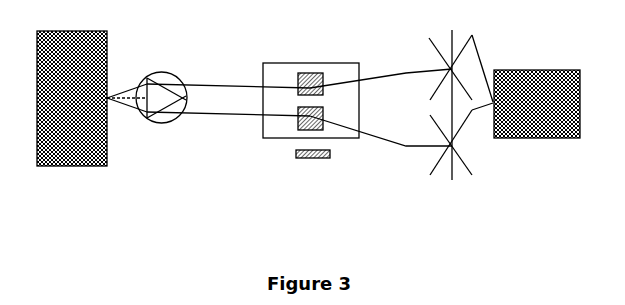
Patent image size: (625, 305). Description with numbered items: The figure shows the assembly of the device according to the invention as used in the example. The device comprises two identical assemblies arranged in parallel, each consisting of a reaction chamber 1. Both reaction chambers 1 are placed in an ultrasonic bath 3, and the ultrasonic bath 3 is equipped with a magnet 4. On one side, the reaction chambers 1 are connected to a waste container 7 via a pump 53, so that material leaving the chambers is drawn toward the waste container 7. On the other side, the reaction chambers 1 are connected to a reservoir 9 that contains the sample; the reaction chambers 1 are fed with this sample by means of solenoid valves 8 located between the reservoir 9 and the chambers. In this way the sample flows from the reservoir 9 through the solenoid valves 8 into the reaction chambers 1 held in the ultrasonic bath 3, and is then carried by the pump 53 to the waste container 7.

The waste container 7 is at (72, 98).
The pump 53 is at (161, 146).
The ultrasonic bath 3 is at (342, 104).
The reaction chamber 1 is at (295, 127).
The magnet 4 is at (316, 163).
The solenoid valves 8 is at (461, 137).
The reservoir 9 is at (537, 104).